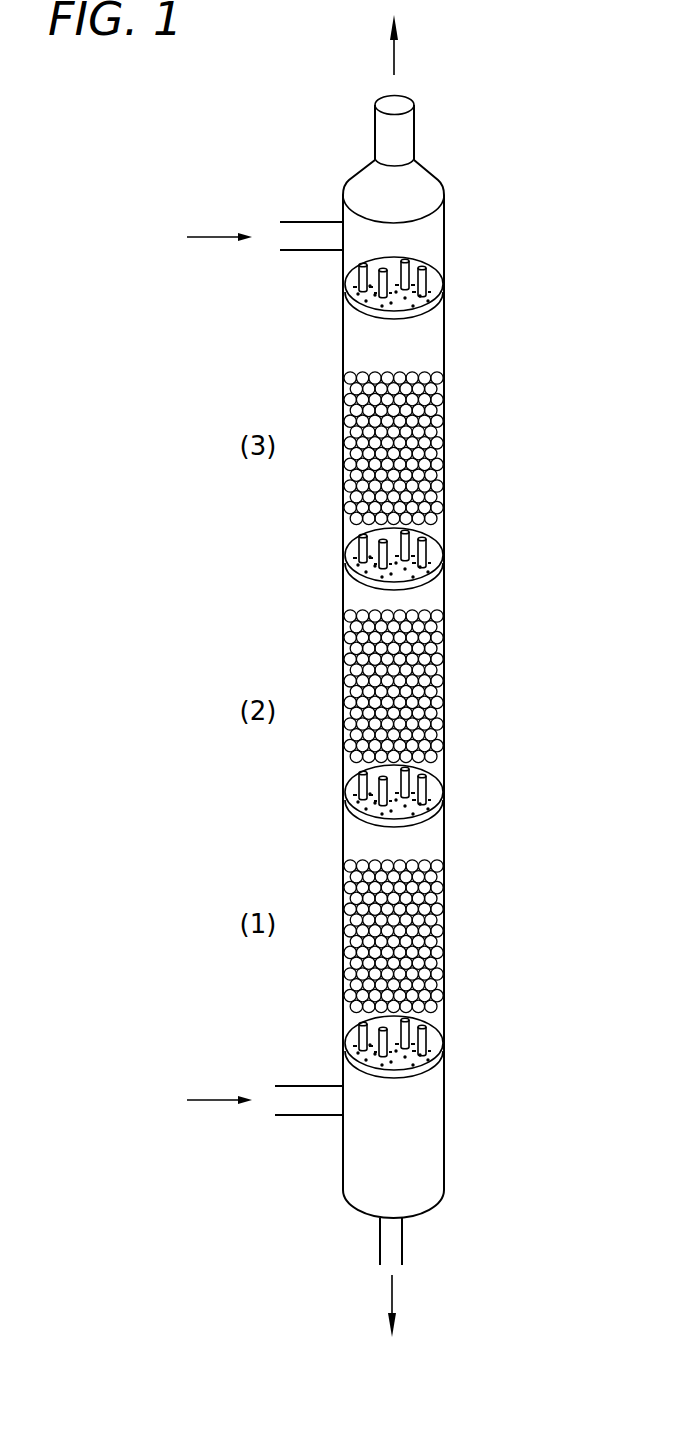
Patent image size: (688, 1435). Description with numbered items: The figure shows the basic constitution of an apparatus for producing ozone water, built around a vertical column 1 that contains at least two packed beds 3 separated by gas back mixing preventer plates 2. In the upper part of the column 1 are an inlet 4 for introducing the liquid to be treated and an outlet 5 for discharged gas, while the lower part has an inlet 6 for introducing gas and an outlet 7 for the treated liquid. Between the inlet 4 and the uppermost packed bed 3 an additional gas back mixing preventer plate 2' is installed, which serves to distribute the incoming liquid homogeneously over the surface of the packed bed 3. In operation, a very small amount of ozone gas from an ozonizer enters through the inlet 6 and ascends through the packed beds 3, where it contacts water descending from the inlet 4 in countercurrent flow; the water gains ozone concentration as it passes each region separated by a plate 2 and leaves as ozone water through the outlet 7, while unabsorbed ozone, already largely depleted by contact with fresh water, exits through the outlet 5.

The column 1 is at (468, 600).
The gas back mixing preventer plate 2 is at (445, 803).
The gas back mixing preventer plate 2' is at (446, 288).
The packed bed 3 is at (437, 406).
The inlet for introducing a liquid to be treated 4 is at (308, 222).
The outlet for a discharged gas 5 is at (405, 133).
The inlet for introducing a gas 6 is at (297, 1100).
The outlet for a treated liquid 7 is at (391, 1238).